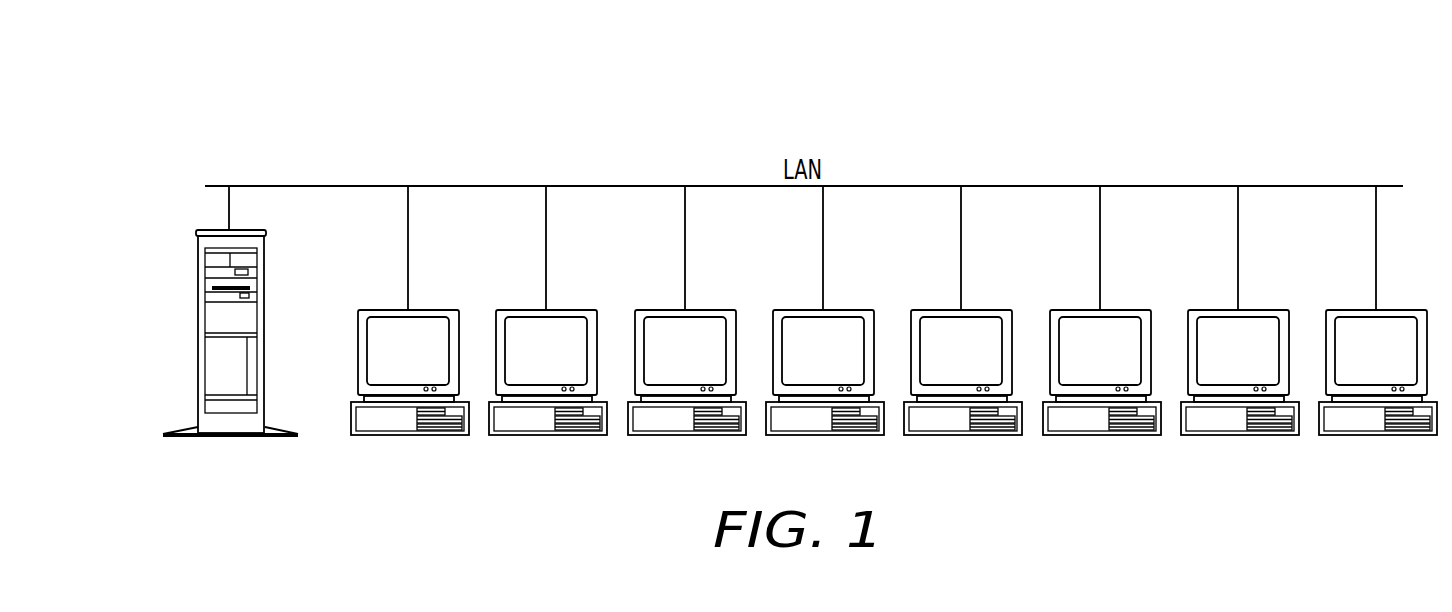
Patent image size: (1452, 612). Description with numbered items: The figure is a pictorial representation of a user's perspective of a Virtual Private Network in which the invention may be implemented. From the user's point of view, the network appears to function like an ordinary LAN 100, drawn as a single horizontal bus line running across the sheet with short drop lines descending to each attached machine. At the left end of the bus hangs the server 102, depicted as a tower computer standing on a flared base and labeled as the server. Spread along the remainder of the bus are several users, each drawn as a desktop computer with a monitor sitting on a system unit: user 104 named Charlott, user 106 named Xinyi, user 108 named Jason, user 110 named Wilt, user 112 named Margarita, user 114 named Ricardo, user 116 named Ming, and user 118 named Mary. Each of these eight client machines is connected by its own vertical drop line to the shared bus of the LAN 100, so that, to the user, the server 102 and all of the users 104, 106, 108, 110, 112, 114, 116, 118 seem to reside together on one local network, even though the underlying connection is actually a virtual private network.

The LAN 100 is at (290, 118).
The server 102 is at (197, 300).
The user 104 is at (385, 309).
The user 106 is at (523, 309).
The user 108 is at (662, 309).
The user 110 is at (800, 309).
The user 112 is at (985, 309).
The user 114 is at (1124, 309).
The user 116 is at (1262, 309).
The user 118 is at (1400, 309).